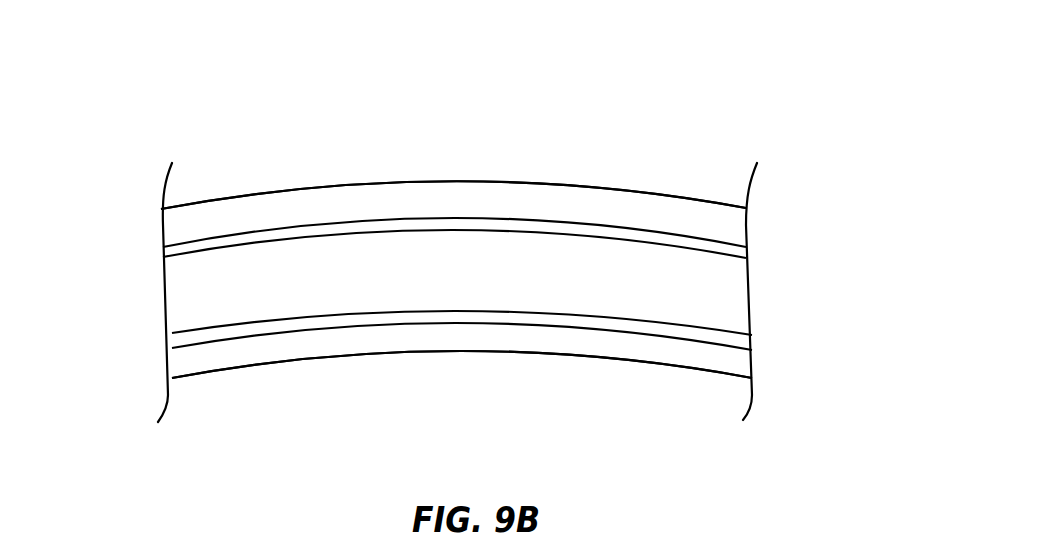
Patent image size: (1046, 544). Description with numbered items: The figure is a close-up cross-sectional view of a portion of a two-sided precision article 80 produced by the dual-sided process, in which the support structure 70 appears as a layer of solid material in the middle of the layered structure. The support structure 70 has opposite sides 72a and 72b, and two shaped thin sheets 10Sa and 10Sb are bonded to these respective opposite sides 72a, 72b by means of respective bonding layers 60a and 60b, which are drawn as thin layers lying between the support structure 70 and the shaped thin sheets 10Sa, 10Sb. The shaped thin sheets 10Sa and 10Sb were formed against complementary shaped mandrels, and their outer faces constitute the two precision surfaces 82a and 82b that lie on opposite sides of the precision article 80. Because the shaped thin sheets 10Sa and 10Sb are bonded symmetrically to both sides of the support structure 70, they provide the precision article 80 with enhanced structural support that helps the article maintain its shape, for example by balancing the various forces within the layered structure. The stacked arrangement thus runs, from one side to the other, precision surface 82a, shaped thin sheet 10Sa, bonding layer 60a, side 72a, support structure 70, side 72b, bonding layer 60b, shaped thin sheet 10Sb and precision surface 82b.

The two-sided precision article 80 is at (189, 90).
The precision surface 82b is at (492, 181).
The side of support structure 72b is at (258, 245).
The bonding layer 60b is at (176, 253).
The shaped thin sheet 10Sb is at (733, 222).
The support structure 70 is at (476, 285).
The bonding layer 60a is at (180, 345).
The side of support structure 72a is at (265, 322).
The precision surface 82a is at (546, 353).
The shaped thin sheet 10Sa is at (733, 360).